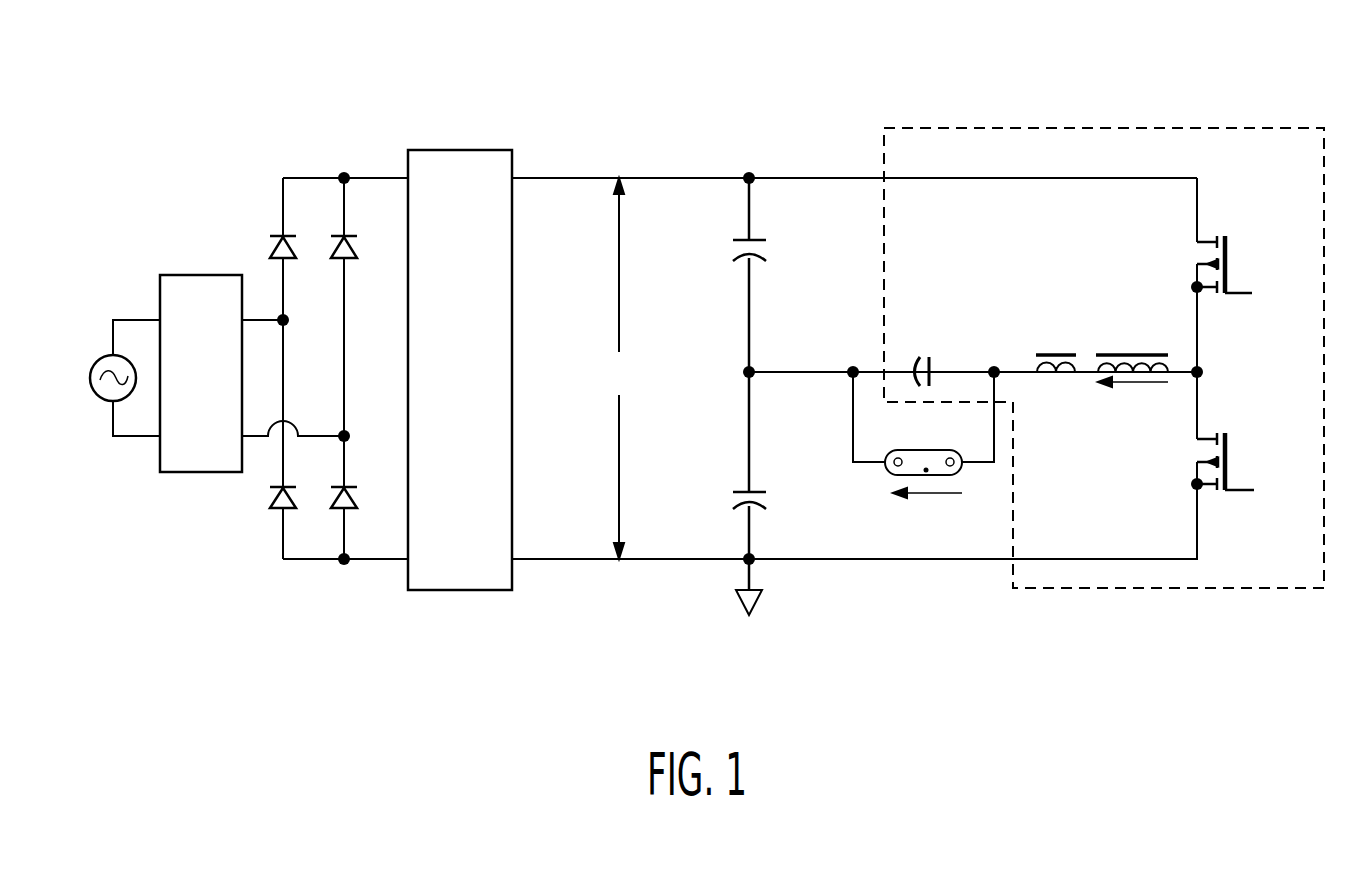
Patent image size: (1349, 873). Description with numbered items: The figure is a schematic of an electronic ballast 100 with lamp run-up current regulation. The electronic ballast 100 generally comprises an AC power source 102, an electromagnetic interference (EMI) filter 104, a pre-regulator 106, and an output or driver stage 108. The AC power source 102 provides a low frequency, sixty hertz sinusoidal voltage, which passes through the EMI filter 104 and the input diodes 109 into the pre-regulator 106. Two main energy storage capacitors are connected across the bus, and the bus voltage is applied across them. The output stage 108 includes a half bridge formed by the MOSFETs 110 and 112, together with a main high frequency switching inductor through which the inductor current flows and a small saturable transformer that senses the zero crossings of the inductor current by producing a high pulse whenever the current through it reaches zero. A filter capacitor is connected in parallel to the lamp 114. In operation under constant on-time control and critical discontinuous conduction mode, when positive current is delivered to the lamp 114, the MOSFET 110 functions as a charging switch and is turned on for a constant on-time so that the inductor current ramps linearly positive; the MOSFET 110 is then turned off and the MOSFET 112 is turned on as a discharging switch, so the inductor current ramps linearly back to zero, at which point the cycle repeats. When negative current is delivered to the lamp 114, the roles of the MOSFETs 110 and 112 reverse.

The electronic ballast 100 is at (166, 106).
The AC power source 102 is at (107, 400).
The electromagnetic interference (EMI) filter 104 is at (197, 476).
The pre-regulator 106 is at (467, 592).
The output or driver stage 108 is at (940, 127).
The input diodes 109 is at (271, 237).
The MOSFET 110 is at (1228, 270).
The MOSFET 112 is at (1228, 462).
The lamp 114 is at (885, 472).